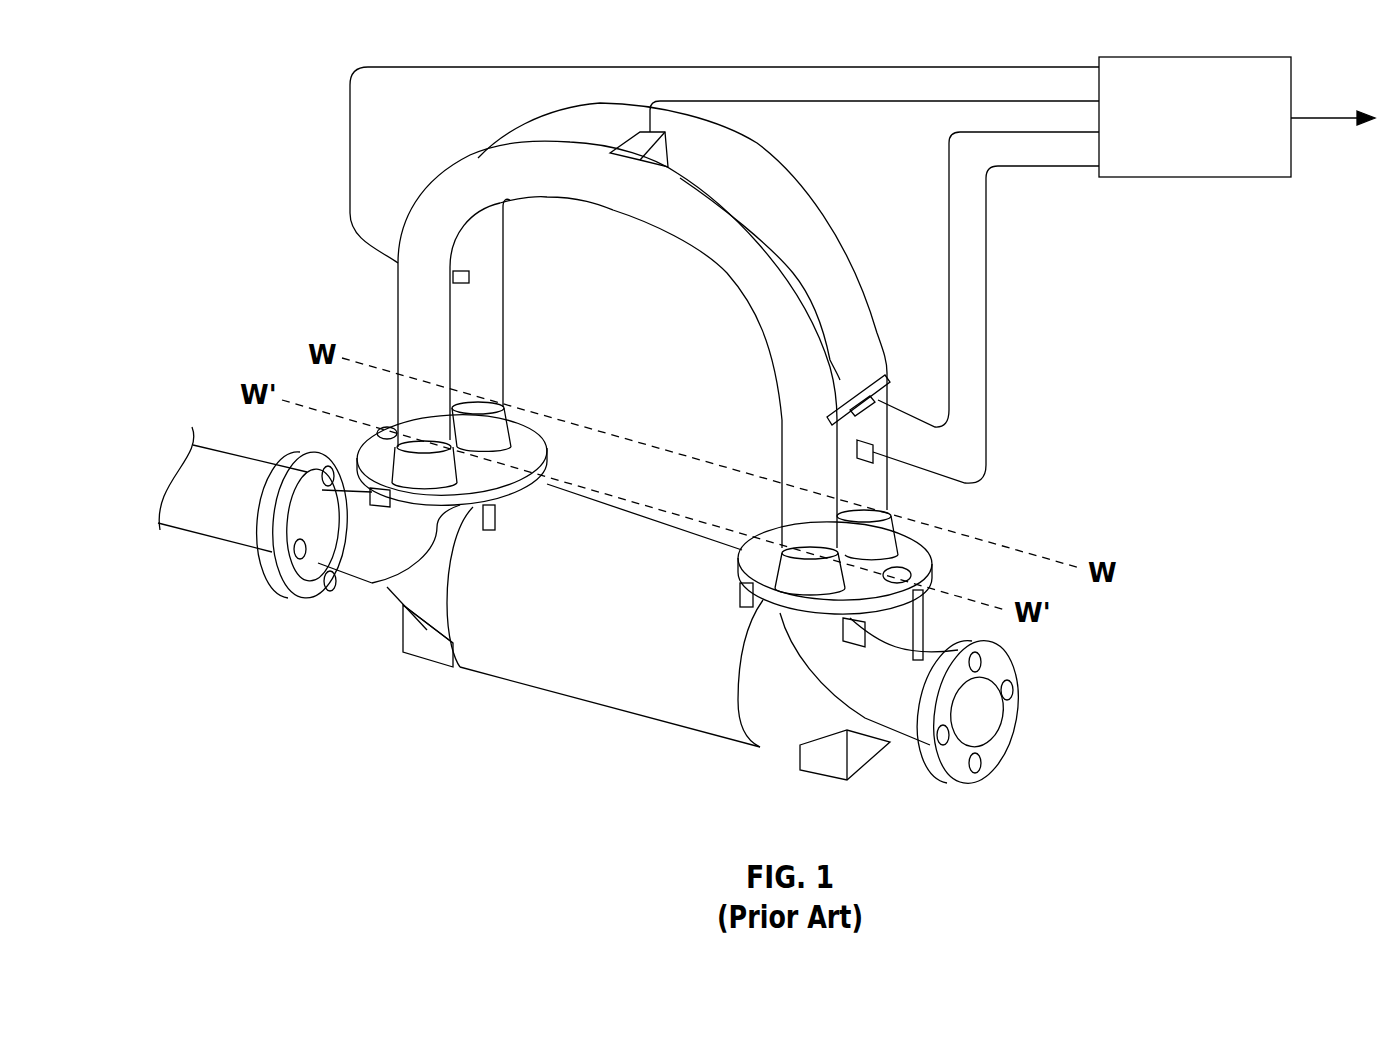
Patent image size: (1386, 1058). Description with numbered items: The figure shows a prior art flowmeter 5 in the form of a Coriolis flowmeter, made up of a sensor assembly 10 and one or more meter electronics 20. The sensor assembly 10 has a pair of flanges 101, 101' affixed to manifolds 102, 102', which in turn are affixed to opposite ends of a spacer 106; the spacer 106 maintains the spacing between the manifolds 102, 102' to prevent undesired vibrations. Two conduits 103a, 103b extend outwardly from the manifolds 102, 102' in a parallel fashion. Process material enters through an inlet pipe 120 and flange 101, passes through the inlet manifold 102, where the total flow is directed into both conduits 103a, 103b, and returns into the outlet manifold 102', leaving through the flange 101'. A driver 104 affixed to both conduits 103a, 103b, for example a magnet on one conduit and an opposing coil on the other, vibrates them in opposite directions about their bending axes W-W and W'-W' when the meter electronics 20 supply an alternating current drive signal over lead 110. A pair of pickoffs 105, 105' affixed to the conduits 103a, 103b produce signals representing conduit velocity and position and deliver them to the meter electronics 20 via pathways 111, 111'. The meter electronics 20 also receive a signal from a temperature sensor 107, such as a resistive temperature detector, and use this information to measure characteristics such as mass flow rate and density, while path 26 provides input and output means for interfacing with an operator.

The sensor assembly 10 is at (176, 122).
The flowmeter 5 is at (1120, 400).
The meter electronics 20 is at (1192, 178).
The path 26 is at (1333, 120).
The flange 101 is at (290, 510).
The flange 101' is at (1008, 712).
The inlet manifold 102 is at (386, 561).
The outlet manifold 102' is at (848, 707).
The conduit 103a is at (404, 313).
The conduit 103b is at (758, 168).
The driver 104 is at (633, 150).
The pickoff 105 is at (515, 298).
The pickoff 105' is at (947, 371).
The spacer 106 is at (608, 693).
The temperature sensor 107 is at (857, 452).
The lead 110 is at (933, 104).
The pathway 111 is at (683, 165).
The pathway 111' is at (981, 279).
The inlet pipe 120 is at (218, 530).